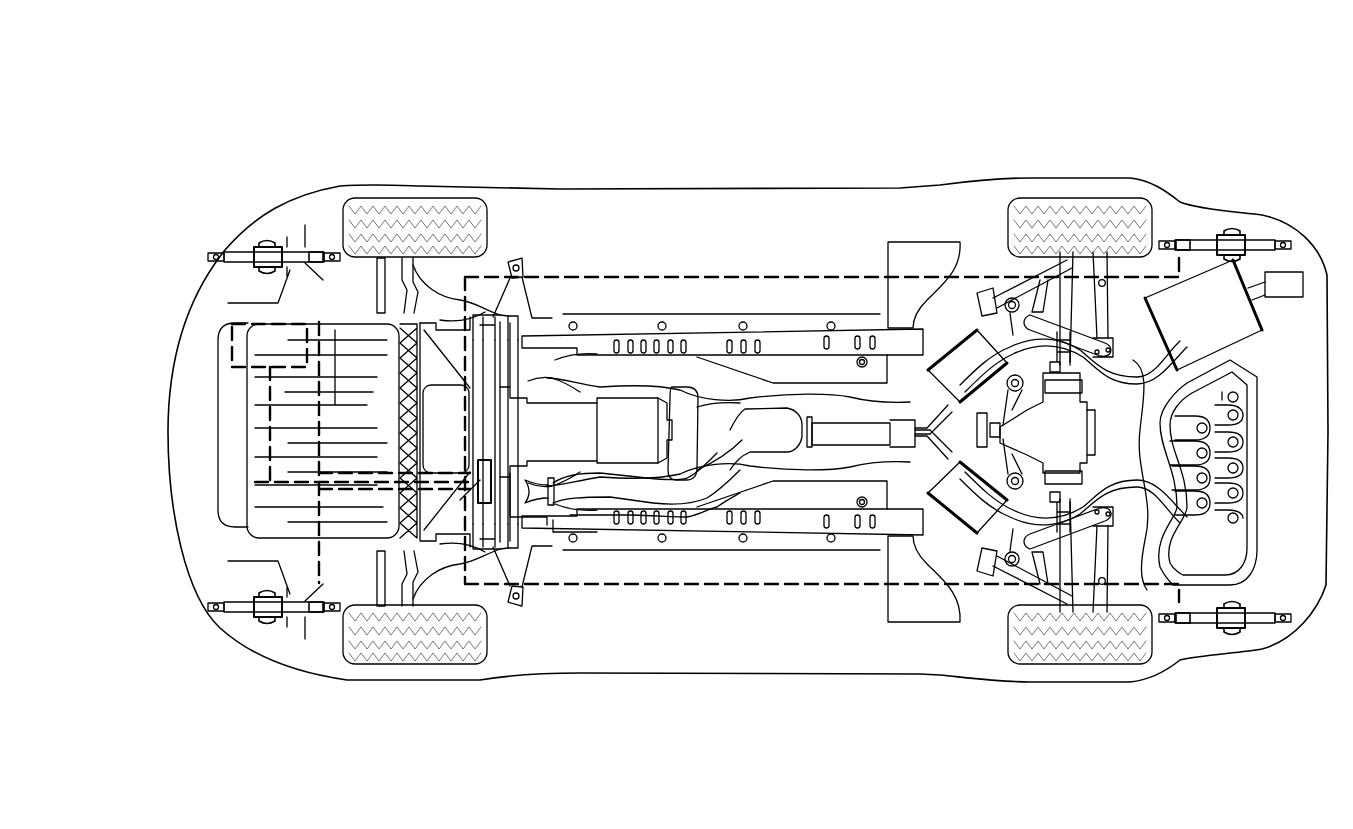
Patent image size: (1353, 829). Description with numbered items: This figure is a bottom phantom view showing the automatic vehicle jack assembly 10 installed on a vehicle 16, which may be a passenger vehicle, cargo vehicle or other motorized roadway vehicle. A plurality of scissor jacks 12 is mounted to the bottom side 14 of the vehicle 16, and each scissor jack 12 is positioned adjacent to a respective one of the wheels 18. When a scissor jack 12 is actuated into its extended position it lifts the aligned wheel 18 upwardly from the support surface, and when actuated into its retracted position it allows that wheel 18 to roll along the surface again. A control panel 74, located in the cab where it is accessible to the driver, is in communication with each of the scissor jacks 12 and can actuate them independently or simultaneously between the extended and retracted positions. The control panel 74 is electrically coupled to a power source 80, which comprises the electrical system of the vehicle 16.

The automatic vehicle jack assembly 10 is at (908, 140).
The scissor jack 12 is at (262, 235).
The bottom side 14 is at (719, 246).
The vehicle 16 is at (575, 187).
The wheel 18 is at (416, 207).
The control panel 74 is at (492, 490).
The power source 80 is at (237, 329).